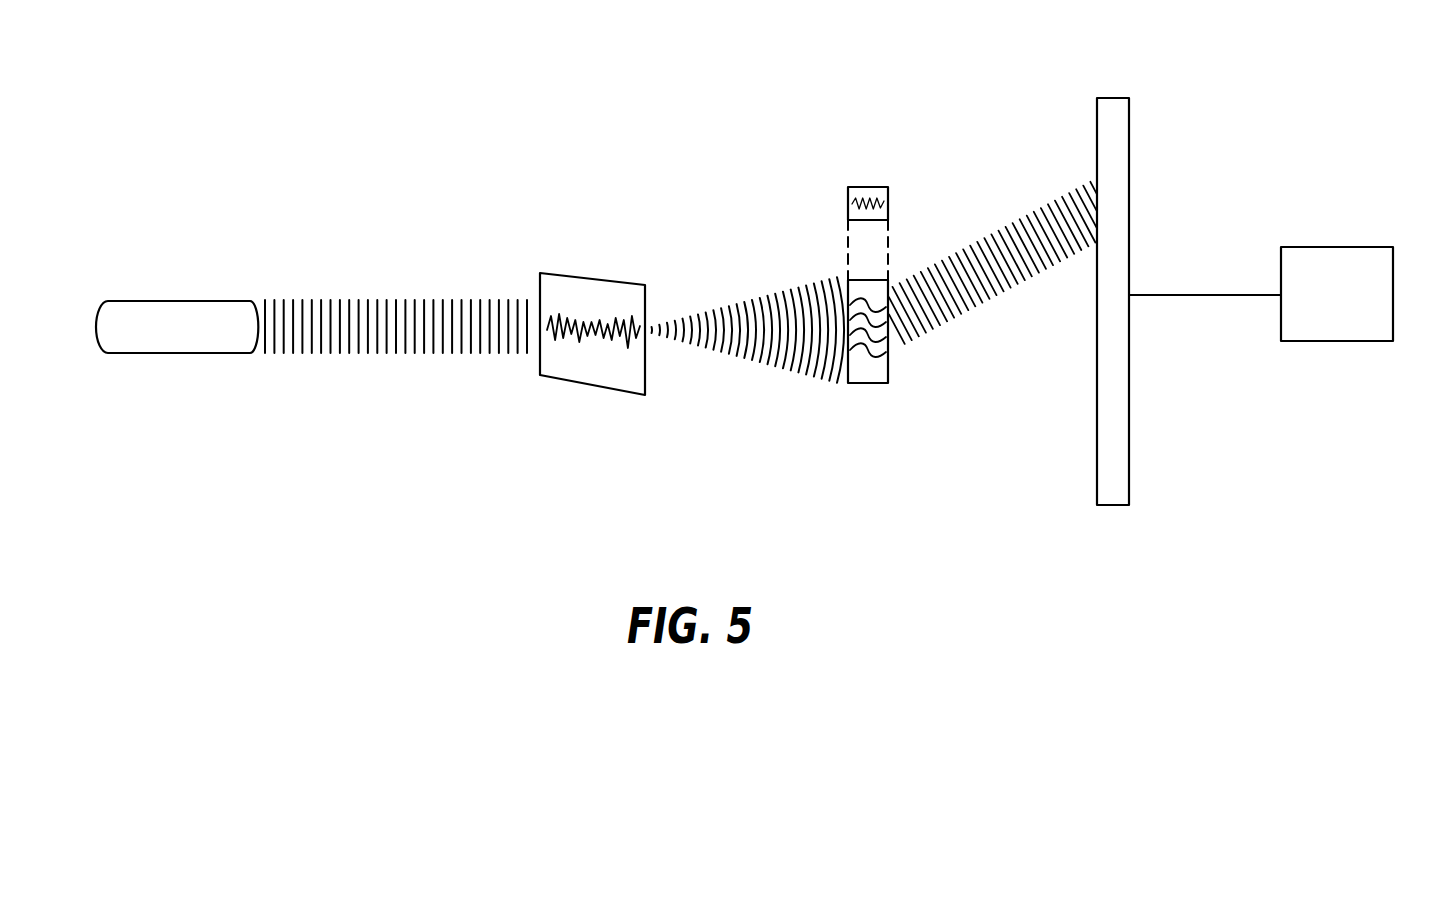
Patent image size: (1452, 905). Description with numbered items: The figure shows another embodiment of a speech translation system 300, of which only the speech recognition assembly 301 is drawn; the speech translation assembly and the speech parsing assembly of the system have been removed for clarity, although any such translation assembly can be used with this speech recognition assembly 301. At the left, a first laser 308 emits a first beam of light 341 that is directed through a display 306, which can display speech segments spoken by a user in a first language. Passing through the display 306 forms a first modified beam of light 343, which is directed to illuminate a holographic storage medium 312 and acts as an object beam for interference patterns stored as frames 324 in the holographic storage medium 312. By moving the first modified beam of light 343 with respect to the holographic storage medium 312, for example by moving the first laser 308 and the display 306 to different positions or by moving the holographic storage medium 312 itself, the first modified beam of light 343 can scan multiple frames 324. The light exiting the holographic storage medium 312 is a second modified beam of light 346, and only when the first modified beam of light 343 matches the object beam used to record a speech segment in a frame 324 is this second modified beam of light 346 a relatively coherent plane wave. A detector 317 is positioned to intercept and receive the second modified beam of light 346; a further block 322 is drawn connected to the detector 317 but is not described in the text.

The speech translation system 300 is at (1010, 77).
The speech recognition assembly 301 is at (1208, 145).
The display 306 is at (592, 277).
The first laser 308 is at (177, 306).
The holographic storage medium 312 is at (888, 380).
The detector 317 is at (1123, 383).
The processing unit 322 is at (1345, 275).
The frame 324 is at (888, 208).
The first beam of light 341 is at (380, 343).
The first modified beam of light 343 is at (780, 366).
The second modified beam of light 346 is at (958, 313).